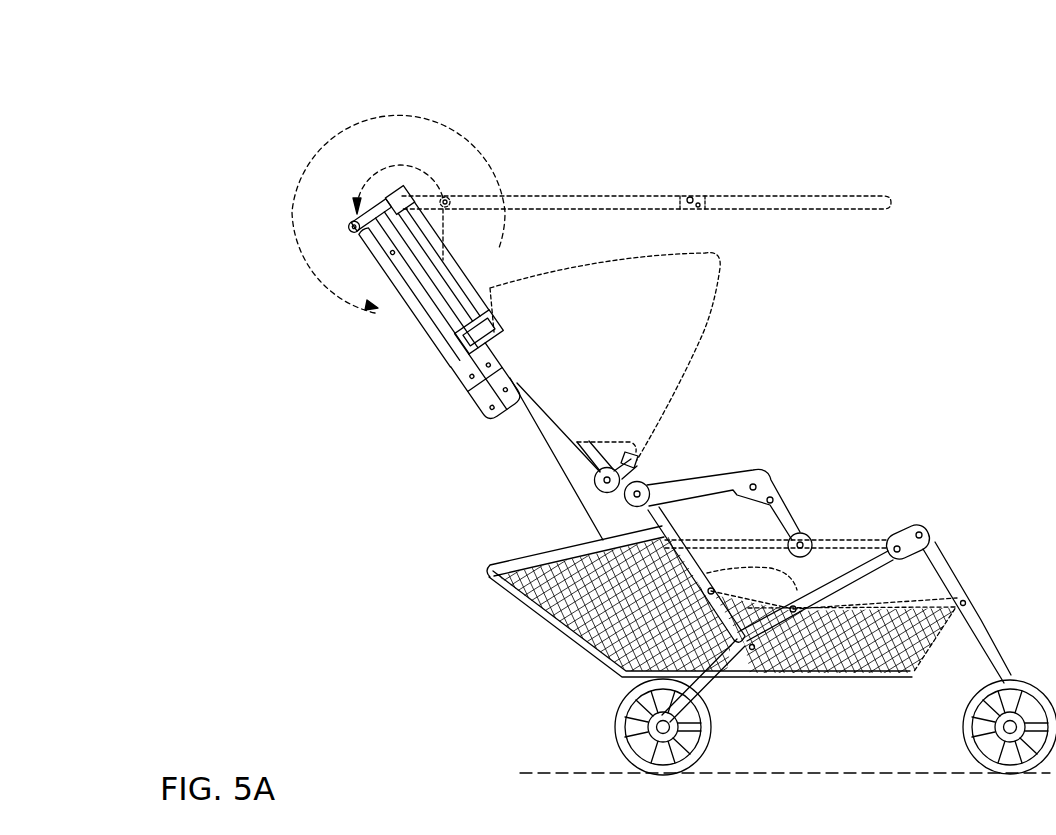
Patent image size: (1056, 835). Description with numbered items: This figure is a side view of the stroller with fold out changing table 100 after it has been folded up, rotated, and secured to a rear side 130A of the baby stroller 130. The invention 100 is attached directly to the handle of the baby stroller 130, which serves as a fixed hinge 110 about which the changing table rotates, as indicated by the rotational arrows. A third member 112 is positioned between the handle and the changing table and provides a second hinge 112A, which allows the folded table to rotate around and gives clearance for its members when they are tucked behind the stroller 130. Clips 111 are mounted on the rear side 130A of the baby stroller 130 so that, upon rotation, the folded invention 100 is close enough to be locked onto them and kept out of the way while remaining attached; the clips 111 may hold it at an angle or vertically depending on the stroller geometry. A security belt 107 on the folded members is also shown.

The stroller with fold out changing table 100 is at (255, 240).
The security belt 107 is at (468, 378).
The fixed hinge 110 is at (398, 197).
The clip 111 is at (458, 338).
The third member 112 is at (377, 210).
The second hinge 112A is at (350, 225).
The baby stroller 130 is at (548, 395).
The rear side of the baby stroller 130A is at (488, 490).